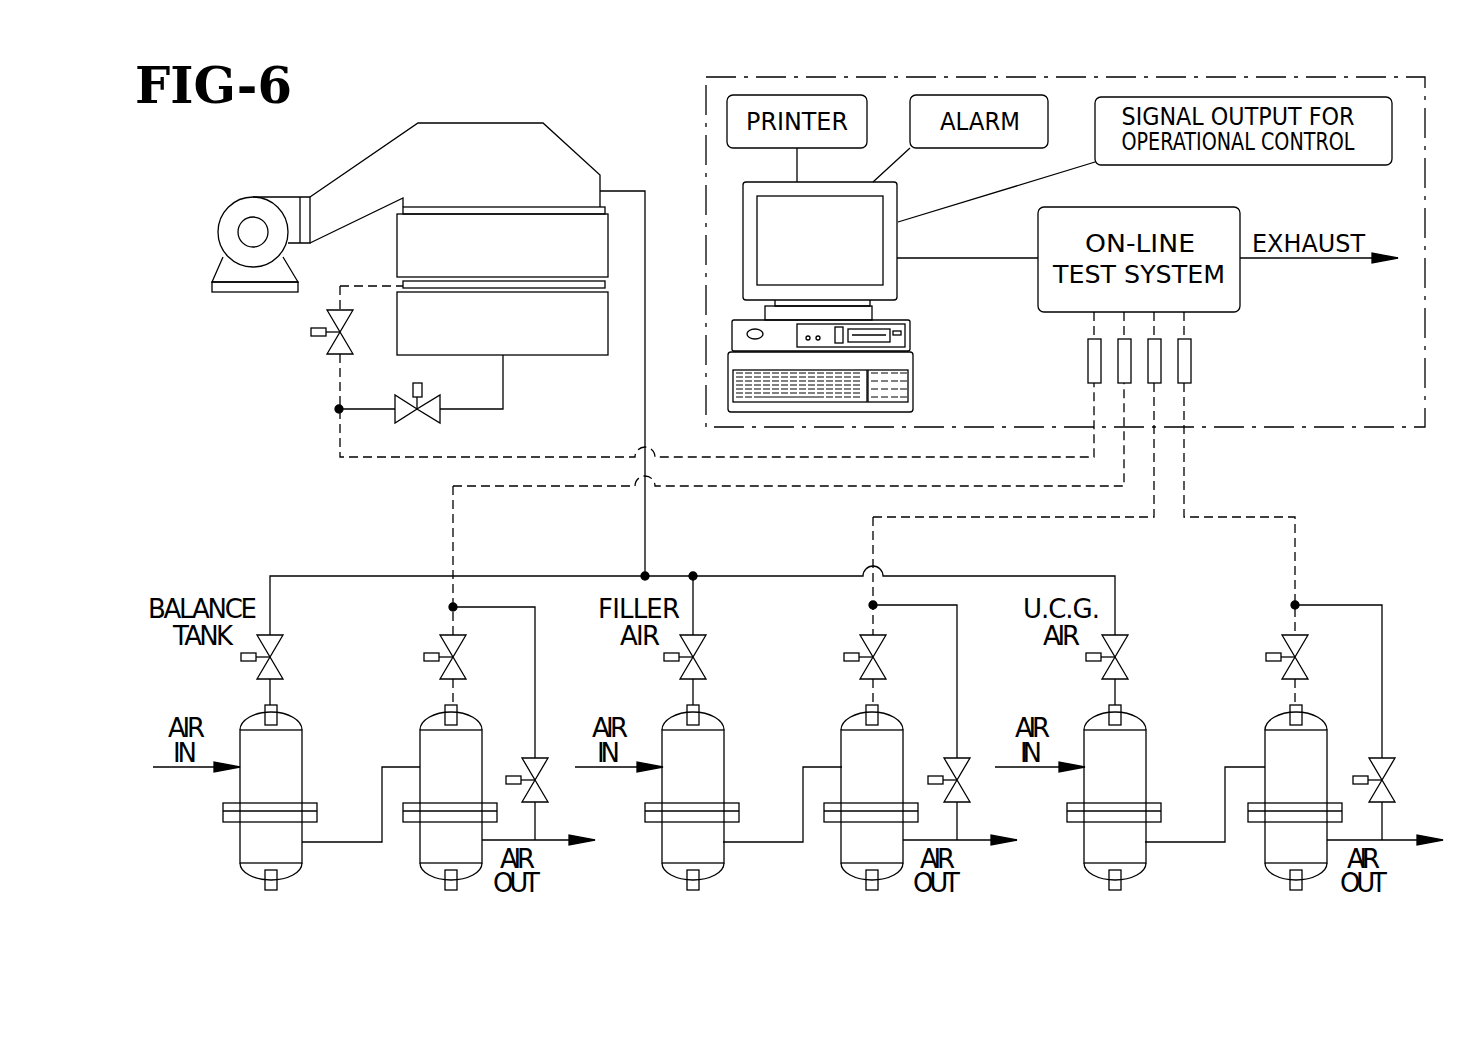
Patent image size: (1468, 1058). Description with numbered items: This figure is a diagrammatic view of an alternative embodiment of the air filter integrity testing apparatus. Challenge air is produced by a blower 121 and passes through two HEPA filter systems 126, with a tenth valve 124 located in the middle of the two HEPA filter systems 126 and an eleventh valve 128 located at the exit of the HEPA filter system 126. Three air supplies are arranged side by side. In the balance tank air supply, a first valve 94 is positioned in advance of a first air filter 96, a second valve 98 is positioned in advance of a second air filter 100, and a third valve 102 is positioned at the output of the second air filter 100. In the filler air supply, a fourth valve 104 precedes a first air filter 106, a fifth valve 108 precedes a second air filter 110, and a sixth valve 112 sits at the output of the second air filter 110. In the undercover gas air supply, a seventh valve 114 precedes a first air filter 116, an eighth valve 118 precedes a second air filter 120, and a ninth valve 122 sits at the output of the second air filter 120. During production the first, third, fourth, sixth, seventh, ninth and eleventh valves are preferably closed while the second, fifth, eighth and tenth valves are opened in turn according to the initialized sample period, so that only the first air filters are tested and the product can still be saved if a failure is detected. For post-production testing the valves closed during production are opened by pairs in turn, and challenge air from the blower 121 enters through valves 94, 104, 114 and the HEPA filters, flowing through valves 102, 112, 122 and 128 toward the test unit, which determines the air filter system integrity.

The first valve 94 is at (276, 668).
The first air filter 96 is at (302, 740).
The second valve 98 is at (447, 637).
The second air filter 100 is at (433, 717).
The third valve 102 is at (543, 795).
The fourth valve 104 is at (697, 665).
The first air filter 106 is at (723, 740).
The fifth valve 108 is at (862, 637).
The second air filter 110 is at (857, 717).
The sixth valve 112 is at (967, 793).
The seventh valve 114 is at (1123, 665).
The first air filter 116 is at (1145, 740).
The eighth valve 118 is at (1283, 637).
The second air filter 120 is at (1278, 717).
The blower 121 is at (245, 208).
The ninth valve 122 is at (1385, 757).
The tenth valve 124 is at (333, 354).
The HEPA filter systems 126 is at (606, 226).
The eleventh valve 128 is at (440, 417).